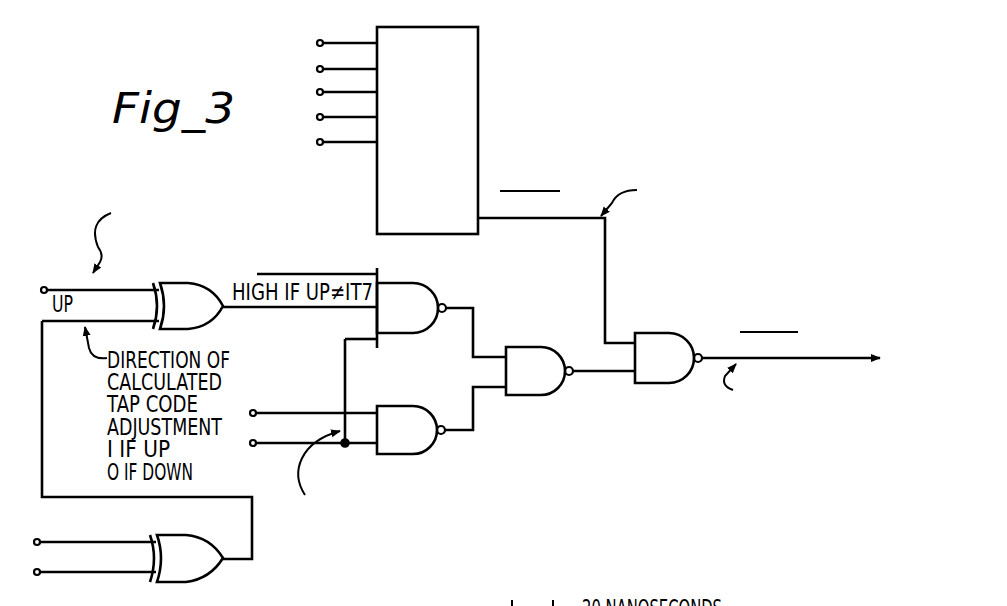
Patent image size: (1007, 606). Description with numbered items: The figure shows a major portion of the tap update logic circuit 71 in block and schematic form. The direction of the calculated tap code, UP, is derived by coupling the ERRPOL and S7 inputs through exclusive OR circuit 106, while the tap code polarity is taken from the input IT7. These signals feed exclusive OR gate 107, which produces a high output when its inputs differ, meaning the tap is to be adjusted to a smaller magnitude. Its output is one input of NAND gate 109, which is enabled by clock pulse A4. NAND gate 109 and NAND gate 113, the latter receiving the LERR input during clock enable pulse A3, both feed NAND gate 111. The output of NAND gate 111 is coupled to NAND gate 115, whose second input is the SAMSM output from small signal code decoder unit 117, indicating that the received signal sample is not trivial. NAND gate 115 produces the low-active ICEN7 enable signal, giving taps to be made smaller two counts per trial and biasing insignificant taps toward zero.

The tap update logic circuit 71 is at (249, 180).
The exclusive OR circuit 106 is at (182, 583).
The exclusive OR gate 107 is at (202, 328).
The NAND gate 109 is at (428, 284).
The NAND gate 111 is at (538, 348).
The NAND gate 113 is at (404, 405).
The NAND gate 115 is at (663, 387).
The small signal code decoder unit 117 is at (479, 136).